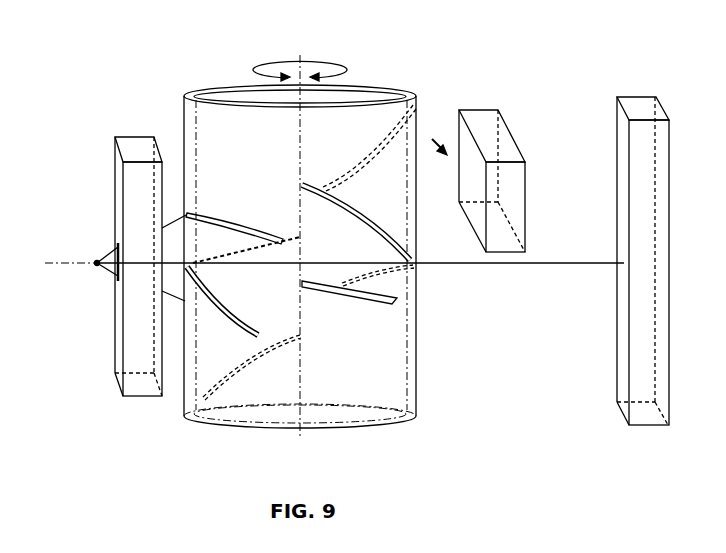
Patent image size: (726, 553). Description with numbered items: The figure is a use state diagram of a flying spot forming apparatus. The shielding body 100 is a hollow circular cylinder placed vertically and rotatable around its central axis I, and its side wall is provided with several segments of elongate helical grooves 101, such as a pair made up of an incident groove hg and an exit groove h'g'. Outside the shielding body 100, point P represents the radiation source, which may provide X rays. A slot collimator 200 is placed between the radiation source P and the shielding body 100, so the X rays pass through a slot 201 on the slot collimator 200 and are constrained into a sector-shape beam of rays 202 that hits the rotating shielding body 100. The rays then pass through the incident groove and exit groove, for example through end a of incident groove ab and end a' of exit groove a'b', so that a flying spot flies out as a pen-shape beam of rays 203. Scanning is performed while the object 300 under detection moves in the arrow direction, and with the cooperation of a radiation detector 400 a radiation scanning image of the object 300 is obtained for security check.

The shielding body 100 is at (300, 247).
The helical grooves 101 is at (355, 165).
The slot collimator 200 is at (138, 281).
The slot 201 is at (118, 243).
The sector-shape beam of rays 202 is at (172, 217).
The pen-shape beam of rays 203 is at (587, 263).
The object under detection 300 is at (478, 167).
The radiation detector 400 is at (643, 279).